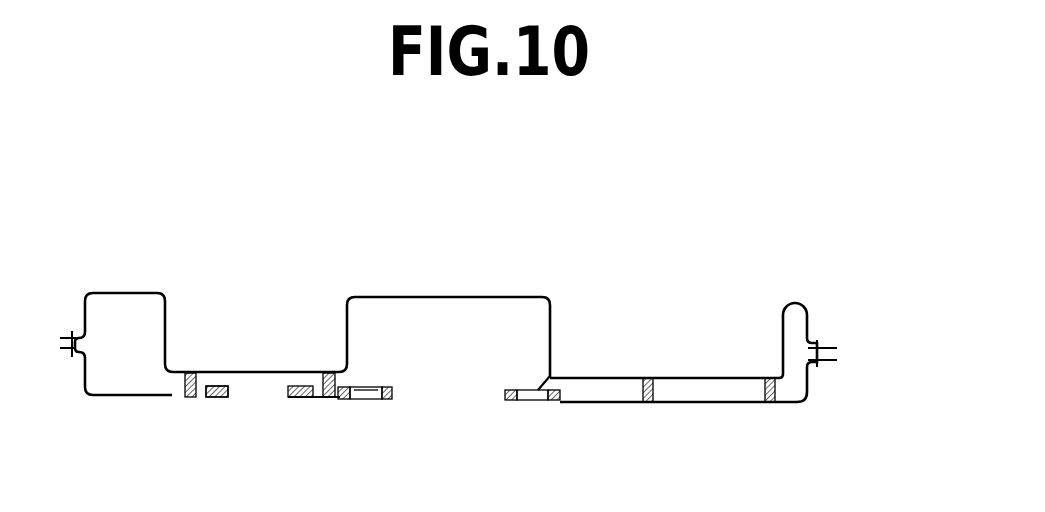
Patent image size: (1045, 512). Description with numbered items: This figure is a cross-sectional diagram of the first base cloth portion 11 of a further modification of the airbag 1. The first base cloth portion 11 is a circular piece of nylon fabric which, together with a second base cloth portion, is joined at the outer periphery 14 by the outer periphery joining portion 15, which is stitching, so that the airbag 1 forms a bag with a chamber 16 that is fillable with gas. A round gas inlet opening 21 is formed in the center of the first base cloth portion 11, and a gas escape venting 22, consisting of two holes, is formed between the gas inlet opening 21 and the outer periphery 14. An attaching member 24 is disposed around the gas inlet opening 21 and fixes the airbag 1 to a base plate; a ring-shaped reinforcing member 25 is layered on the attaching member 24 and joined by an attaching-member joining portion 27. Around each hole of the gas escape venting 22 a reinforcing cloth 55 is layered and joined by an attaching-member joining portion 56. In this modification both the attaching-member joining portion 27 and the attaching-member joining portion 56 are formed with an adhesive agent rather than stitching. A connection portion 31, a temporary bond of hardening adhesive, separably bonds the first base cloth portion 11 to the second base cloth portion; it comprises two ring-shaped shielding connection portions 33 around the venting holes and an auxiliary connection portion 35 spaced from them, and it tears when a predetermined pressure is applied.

The airbag 1 is at (746, 214).
The first base cloth portion 11 is at (553, 323).
The outer periphery 14 is at (822, 347).
The outer periphery joining portion 15 is at (818, 345).
The chamber 16 is at (417, 320).
The gas inlet opening 21 is at (448, 388).
The gas escape venting 22 is at (245, 388).
The attaching member 24 is at (540, 402).
The reinforcing member 25 is at (555, 374).
The attaching-member joining portion 27 is at (377, 399).
The connection portion 31 is at (168, 398).
The shielding connection portion 33 is at (188, 398).
The auxiliary connection portion 35 is at (778, 397).
The reinforcing cloth 55 is at (219, 372).
The attaching-member joining portion 56 is at (217, 398).